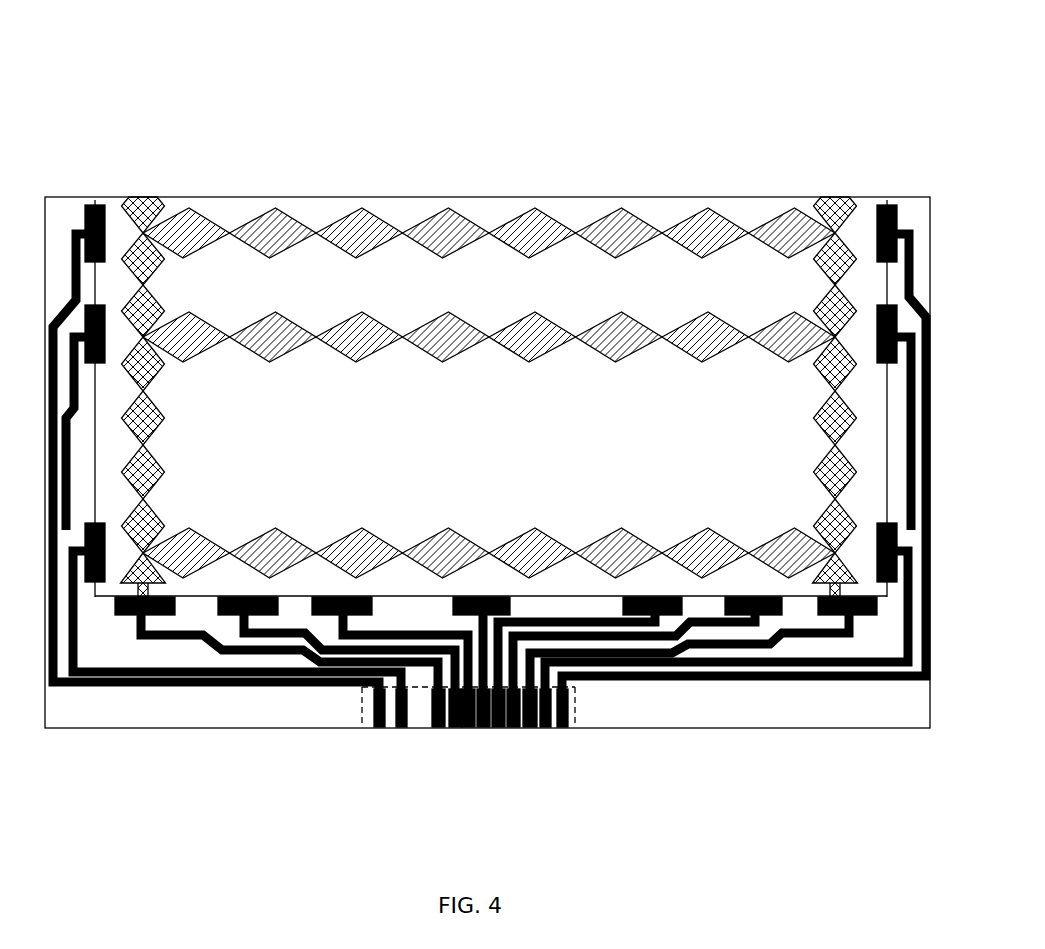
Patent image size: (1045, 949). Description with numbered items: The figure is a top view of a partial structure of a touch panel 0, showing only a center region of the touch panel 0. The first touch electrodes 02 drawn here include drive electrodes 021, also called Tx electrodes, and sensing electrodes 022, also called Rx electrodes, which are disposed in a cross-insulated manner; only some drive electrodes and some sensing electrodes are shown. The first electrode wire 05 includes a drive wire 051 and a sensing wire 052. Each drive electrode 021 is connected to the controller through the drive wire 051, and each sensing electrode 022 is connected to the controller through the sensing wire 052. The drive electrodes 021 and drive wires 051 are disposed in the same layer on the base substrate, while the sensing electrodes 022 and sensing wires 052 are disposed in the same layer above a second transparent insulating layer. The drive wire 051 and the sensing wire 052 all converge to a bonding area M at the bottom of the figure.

The touch panel 0 is at (452, 65).
The first touch electrodes 02 is at (842, 118).
The drive electrode 021 is at (706, 222).
The sensing electrode 022 is at (838, 192).
The first electrode wire 05 is at (892, 790).
The drive wire 051 is at (893, 676).
The sensing wire 052 is at (840, 653).
The bonding area M is at (346, 710).